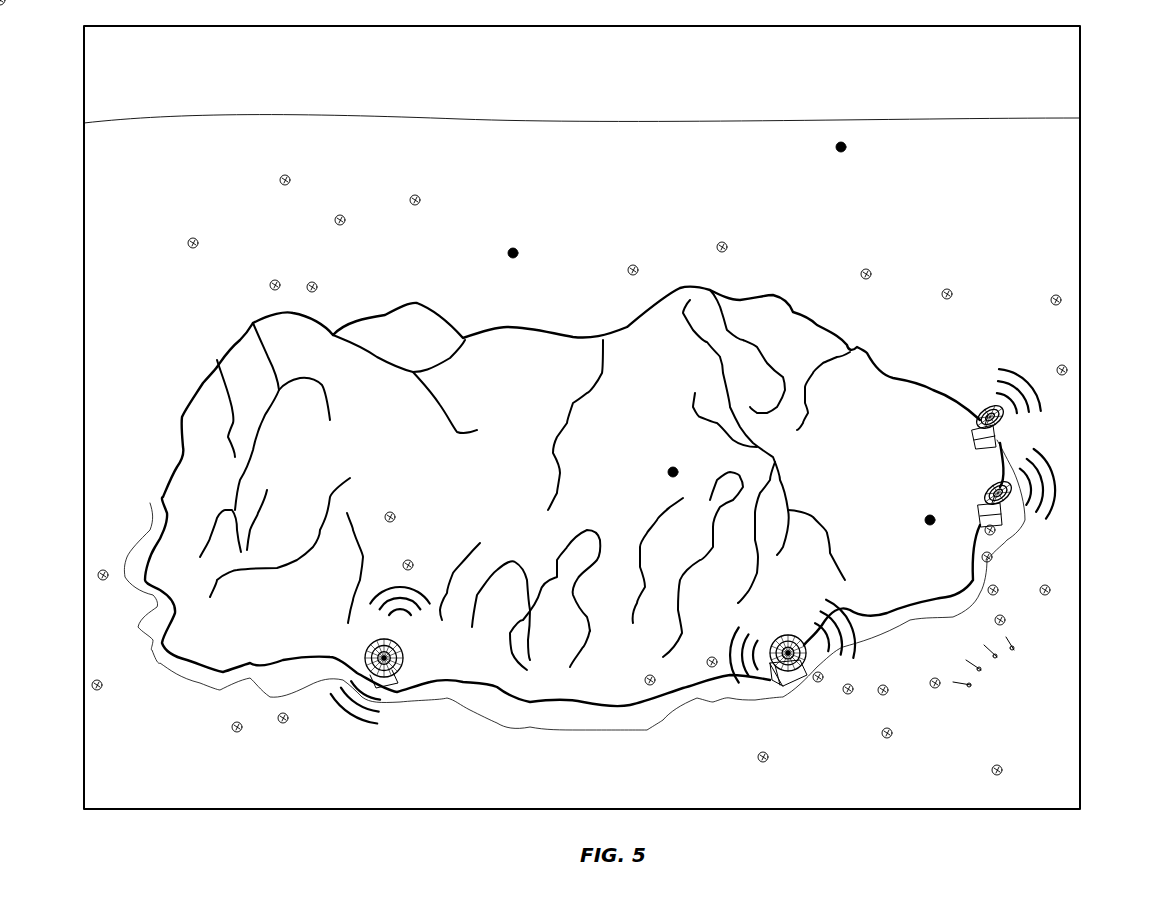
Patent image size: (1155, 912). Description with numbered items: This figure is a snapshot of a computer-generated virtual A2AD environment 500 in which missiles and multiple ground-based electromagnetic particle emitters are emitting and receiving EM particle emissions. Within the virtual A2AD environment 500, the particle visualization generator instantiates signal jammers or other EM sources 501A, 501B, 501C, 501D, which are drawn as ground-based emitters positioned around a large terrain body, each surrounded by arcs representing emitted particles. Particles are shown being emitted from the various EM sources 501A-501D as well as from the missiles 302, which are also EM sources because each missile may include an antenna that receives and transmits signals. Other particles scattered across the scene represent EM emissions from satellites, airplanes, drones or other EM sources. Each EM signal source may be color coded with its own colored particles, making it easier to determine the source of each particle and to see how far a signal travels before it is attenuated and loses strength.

The virtual A2AD environment 500 is at (1080, 47).
The EM source 501A is at (998, 432).
The EM source 501B is at (1000, 515).
The EM source 501C is at (793, 680).
The EM source 501D is at (392, 680).
The missiles 302 is at (1013, 643).